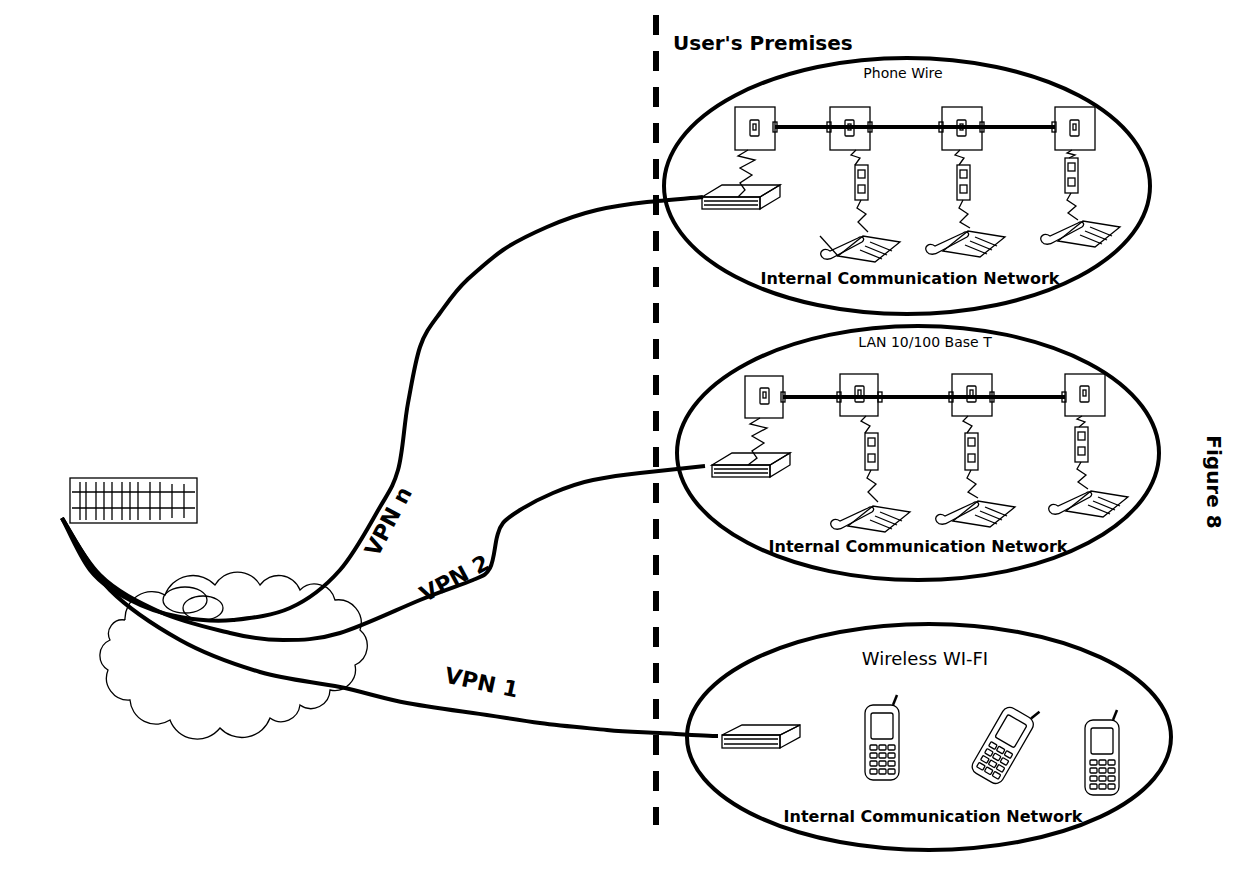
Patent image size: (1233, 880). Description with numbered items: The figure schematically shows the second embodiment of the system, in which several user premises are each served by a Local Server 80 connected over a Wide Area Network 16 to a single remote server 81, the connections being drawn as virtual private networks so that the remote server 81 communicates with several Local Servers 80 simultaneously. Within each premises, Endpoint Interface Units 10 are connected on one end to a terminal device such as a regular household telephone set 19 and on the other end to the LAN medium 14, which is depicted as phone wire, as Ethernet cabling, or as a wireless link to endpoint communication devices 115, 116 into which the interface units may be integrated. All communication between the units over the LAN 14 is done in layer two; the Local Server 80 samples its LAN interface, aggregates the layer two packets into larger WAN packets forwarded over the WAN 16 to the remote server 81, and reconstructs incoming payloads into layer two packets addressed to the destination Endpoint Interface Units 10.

The Endpoint Interface Unit 10 is at (980, 330).
The LAN medium 14 is at (920, 386).
The Wide Area Network (WAN) 16 is at (233, 655).
The household telephone set 19 is at (968, 376).
The Local Server 80 is at (758, 482).
The remote server 81 is at (133, 484).
The endpoint communication device 115 is at (977, 739).
The endpoint communication device 116 is at (989, 734).